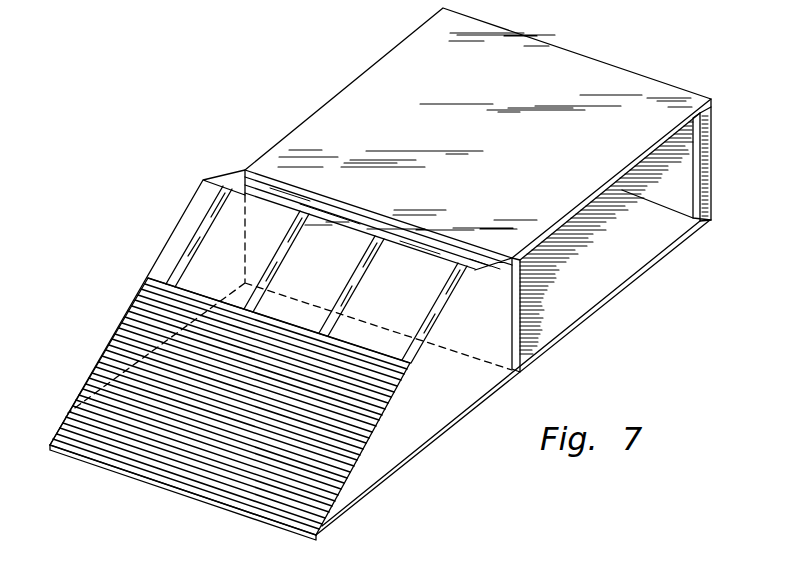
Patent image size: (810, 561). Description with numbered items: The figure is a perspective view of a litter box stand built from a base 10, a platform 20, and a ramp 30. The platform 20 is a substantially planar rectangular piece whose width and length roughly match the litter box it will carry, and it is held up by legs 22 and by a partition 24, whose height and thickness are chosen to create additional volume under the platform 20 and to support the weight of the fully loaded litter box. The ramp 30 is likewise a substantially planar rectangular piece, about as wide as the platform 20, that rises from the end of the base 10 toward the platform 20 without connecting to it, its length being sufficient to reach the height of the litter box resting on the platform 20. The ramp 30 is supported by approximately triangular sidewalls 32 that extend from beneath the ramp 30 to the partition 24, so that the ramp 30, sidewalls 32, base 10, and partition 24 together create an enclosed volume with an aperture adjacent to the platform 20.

The base 10 is at (612, 298).
The platform 20 is at (568, 68).
The legs 22 is at (707, 170).
The partition 24 is at (527, 337).
The ramp 30 is at (193, 236).
The sidewalls 32 is at (422, 405).